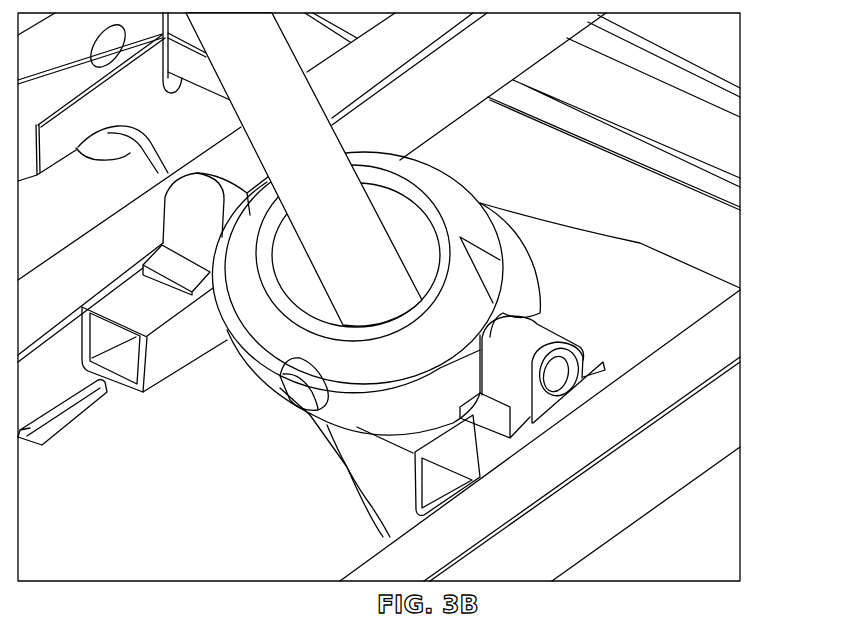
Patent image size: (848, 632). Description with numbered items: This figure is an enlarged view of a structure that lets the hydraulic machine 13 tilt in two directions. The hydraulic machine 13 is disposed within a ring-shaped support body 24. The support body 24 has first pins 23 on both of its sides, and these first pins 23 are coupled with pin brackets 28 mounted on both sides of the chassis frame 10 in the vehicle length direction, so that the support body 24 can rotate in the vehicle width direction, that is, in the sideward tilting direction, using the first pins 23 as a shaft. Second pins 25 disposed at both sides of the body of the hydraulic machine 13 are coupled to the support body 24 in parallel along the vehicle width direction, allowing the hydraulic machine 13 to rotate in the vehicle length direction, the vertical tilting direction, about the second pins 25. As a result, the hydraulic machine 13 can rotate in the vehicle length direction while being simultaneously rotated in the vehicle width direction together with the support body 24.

The chassis frame 10 is at (712, 408).
The hydraulic machine 13 is at (475, 305).
The first pin 23 is at (570, 380).
The support body 24 is at (367, 427).
The second pin 25 is at (293, 402).
The pin bracket 28 is at (530, 343).